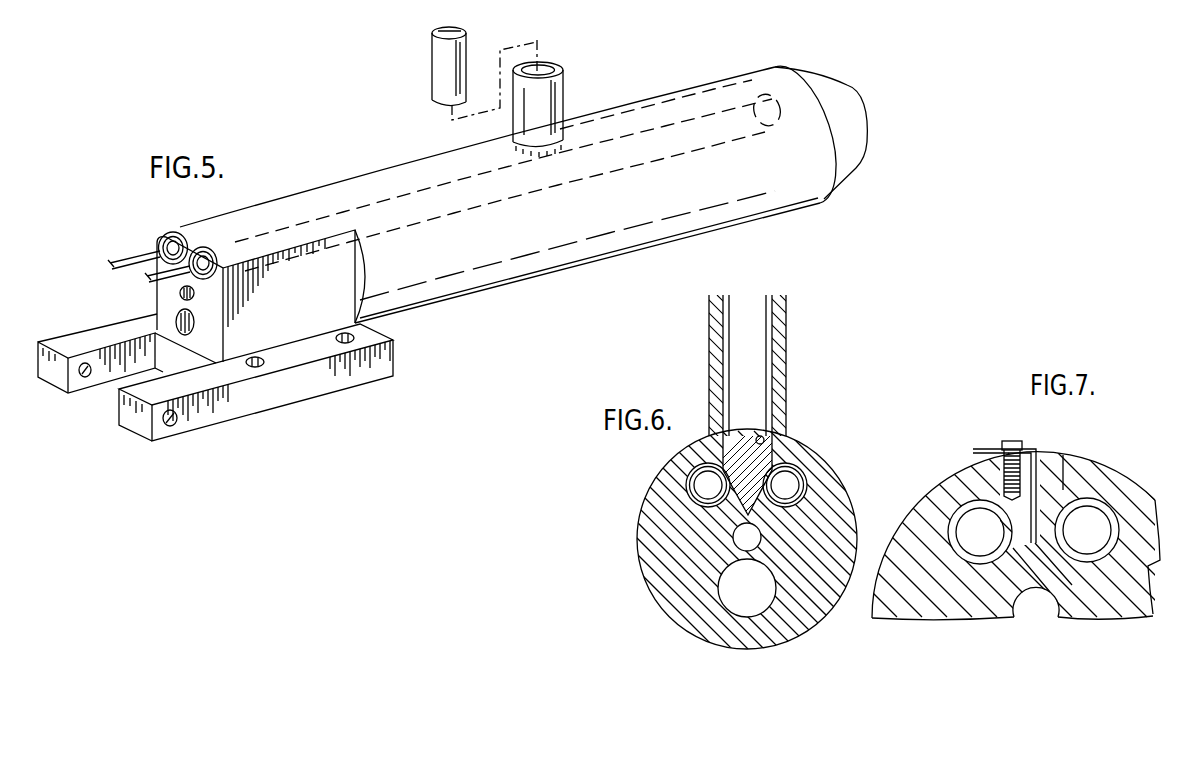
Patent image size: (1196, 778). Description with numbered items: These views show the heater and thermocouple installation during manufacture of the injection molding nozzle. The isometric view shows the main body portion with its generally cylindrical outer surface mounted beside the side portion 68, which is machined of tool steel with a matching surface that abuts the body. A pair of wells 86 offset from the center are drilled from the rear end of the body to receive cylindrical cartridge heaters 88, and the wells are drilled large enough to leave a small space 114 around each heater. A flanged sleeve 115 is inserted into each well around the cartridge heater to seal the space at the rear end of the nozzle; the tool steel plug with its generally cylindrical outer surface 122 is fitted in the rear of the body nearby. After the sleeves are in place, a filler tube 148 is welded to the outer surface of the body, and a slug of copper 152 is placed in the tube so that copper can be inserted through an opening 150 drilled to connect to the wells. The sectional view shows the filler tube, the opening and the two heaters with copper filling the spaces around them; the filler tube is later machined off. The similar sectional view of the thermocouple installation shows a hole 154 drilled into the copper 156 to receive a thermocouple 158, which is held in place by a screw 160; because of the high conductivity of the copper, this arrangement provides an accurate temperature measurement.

In FIG. 5, the side portion 68 is at (318, 392).
In FIG. 6, the wells 86 is at (691, 478).
In FIG. 5, the cartridge heaters 88 is at (172, 234).
In FIG. 6, the cartridge heaters 88 is at (705, 490).
In FIG. 6, the space 114 is at (695, 500).
In FIG. 5, the flanged sleeve 115 is at (223, 265).
In FIG. 5, the outer surface 122 is at (163, 315).
In FIG. 5, the filler tube 148 is at (564, 88).
In FIG. 6, the filler tube 148 is at (787, 362).
In FIG. 6, the opening 150 is at (764, 440).
In FIG. 5, the slug of copper 152 is at (430, 55).
In FIG. 7, the hole 154 is at (1037, 508).
In FIG. 7, the copper 156 is at (1058, 482).
In FIG. 7, the thermocouple 158 is at (1037, 462).
In FIG. 7, the screw 160 is at (1010, 440).